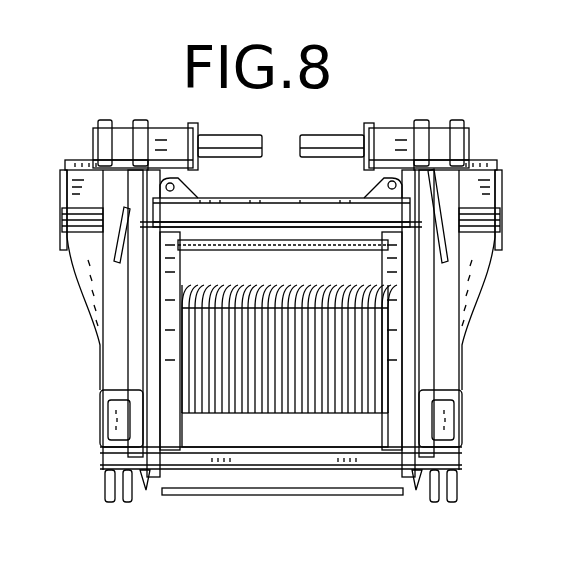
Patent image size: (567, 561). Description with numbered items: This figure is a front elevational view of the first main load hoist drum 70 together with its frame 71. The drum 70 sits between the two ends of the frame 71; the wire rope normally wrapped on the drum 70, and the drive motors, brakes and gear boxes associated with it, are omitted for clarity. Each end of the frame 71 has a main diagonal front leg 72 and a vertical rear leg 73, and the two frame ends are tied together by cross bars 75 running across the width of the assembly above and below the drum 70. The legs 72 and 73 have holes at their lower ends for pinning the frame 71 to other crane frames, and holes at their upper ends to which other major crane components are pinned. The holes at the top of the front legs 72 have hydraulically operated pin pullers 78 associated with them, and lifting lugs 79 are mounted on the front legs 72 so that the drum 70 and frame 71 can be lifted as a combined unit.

The first main load hoist drum 70 is at (233, 417).
The frame 71 is at (472, 340).
The main diagonal front leg 72 is at (444, 367).
The vertical rear leg 73 is at (90, 240).
The cross bars 75 is at (283, 205).
The hydraulically operated pin pullers 78 is at (168, 122).
The lifting lugs 79 is at (148, 232).